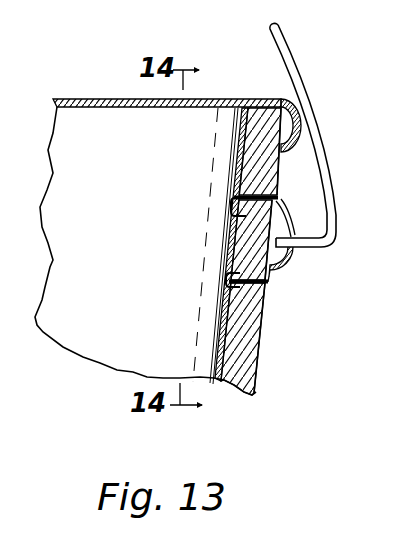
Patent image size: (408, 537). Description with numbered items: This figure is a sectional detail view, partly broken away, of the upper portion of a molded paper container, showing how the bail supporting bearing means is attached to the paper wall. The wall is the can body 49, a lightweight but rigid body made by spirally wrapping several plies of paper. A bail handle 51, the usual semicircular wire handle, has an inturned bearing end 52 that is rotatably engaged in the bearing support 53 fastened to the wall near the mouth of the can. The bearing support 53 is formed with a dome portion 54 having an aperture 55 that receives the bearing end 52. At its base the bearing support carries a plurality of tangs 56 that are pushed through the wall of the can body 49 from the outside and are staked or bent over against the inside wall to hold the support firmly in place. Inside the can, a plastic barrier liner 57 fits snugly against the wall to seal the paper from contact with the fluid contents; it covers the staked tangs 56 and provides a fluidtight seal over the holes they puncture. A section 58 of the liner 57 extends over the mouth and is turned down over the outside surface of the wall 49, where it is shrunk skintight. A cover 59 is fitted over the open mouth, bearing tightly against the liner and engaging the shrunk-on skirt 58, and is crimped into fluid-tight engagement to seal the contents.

The can body 49 is at (260, 357).
The bail handle 51 is at (300, 90).
The inturned bearing ends 52 is at (305, 247).
The bearing support 53 is at (294, 208).
The dome portion 54 is at (286, 270).
The aperture 55 is at (293, 238).
The tangs 56 is at (234, 207).
The plastic barrier liner 57 is at (233, 328).
The liner section 58 is at (277, 153).
The cover 59 is at (97, 80).